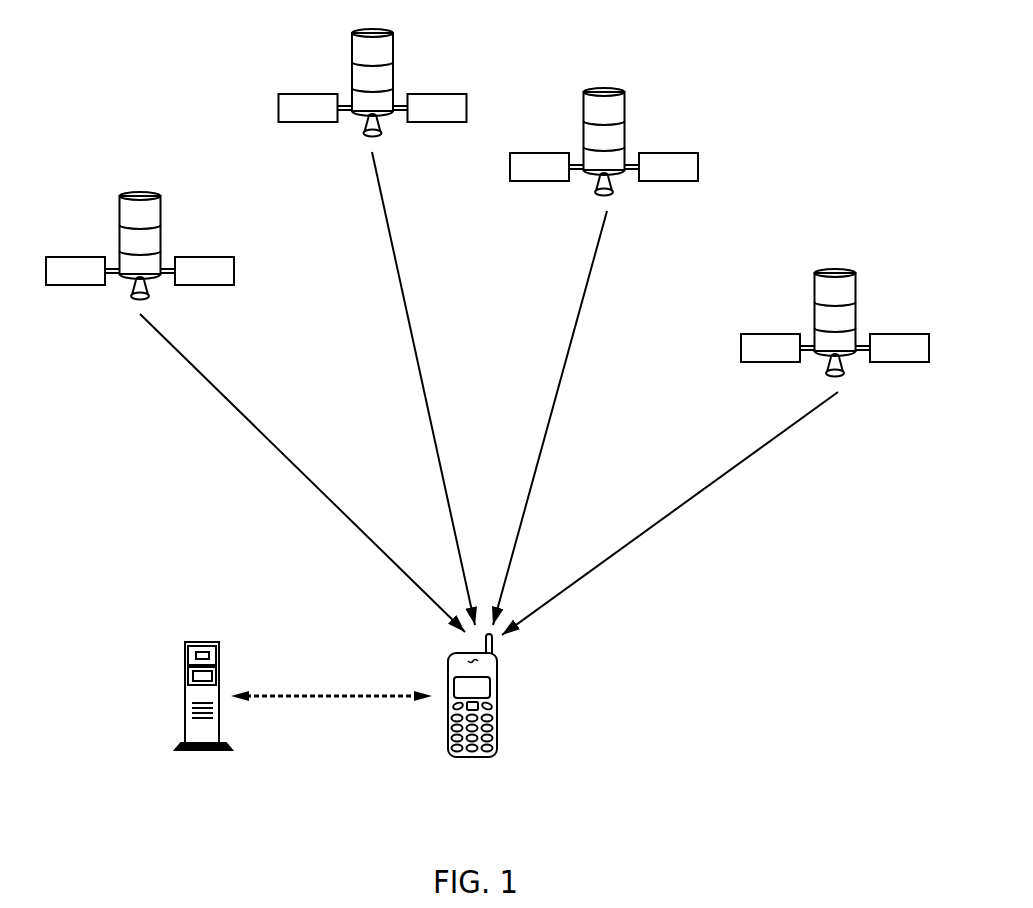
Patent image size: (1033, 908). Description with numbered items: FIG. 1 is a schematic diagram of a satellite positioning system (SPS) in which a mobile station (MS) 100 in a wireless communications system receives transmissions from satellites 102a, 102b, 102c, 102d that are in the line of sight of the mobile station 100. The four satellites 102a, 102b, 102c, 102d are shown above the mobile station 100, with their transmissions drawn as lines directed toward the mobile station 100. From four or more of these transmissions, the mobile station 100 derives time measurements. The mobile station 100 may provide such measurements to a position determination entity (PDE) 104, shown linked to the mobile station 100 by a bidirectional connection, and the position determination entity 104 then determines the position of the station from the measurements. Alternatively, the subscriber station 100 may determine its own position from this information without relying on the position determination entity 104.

The mobile station 100 is at (476, 757).
The satellite 102a is at (146, 196).
The satellite 102b is at (378, 33).
The satellite 102c is at (610, 92).
The satellite 102d is at (841, 273).
The position determination entity 104 is at (195, 642).